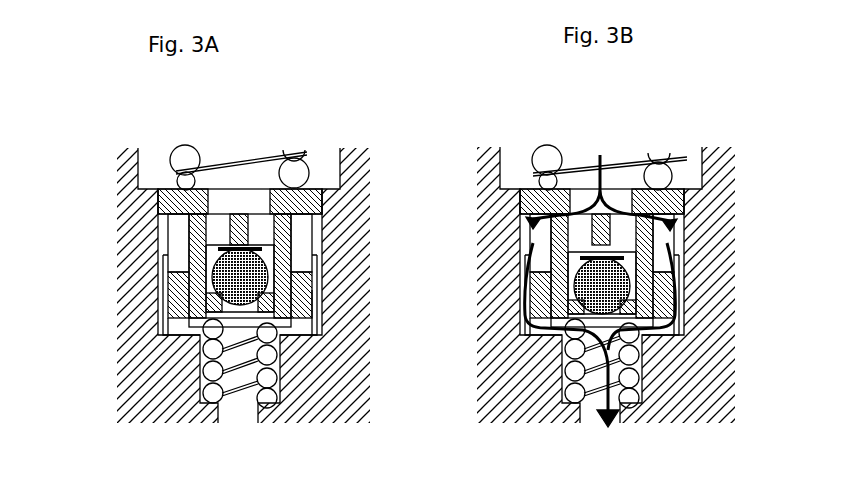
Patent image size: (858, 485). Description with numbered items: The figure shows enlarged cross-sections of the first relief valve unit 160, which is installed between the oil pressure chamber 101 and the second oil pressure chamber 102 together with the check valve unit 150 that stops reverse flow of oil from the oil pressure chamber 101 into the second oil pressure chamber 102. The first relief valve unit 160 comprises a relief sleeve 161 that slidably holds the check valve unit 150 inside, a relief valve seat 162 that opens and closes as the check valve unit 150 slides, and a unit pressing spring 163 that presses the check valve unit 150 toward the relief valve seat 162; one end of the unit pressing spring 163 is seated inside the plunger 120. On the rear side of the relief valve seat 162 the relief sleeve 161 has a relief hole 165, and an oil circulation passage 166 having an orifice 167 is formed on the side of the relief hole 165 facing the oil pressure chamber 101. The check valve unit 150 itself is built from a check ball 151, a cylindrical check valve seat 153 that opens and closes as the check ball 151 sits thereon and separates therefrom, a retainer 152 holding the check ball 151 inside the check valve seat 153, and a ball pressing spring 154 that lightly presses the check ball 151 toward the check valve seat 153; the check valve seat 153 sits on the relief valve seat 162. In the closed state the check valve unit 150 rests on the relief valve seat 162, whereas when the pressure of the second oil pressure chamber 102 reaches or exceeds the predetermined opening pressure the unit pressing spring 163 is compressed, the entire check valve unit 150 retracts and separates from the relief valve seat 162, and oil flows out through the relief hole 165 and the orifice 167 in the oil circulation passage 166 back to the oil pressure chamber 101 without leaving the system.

In FIG. 3B, the oil pressure chamber 101 is at (661, 339).
In FIG. 3B, the second oil pressure chamber 102 is at (671, 183).
In FIG. 3A, the plunger 120 is at (143, 388).
In FIG. 3B, the check valve unit 150 is at (684, 269).
In FIG. 3A, the check ball 151 is at (263, 253).
In FIG. 3A, the retainer 152 is at (300, 186).
In FIG. 3A, the check valve seat 153 is at (318, 290).
In FIG. 3A, the ball pressing spring 154 is at (320, 212).
In FIG. 3A, the first relief valve unit 160 is at (237, 217).
In FIG. 3B, the first relief valve unit 160 is at (639, 218).
In FIG. 3A, the relief sleeve 161 is at (163, 293).
In FIG. 3A, the relief valve seat 162 is at (138, 172).
In FIG. 3A, the unit pressing spring 163 is at (213, 367).
In FIG. 3B, the unit pressing spring 163 is at (519, 363).
In FIG. 3A, the relief hole 165 is at (168, 231).
In FIG. 3A, the oil circulation passage 166 is at (163, 272).
In FIG. 3A, the orifice 167 is at (316, 300).
In FIG. 3B, the orifice 167 is at (501, 295).